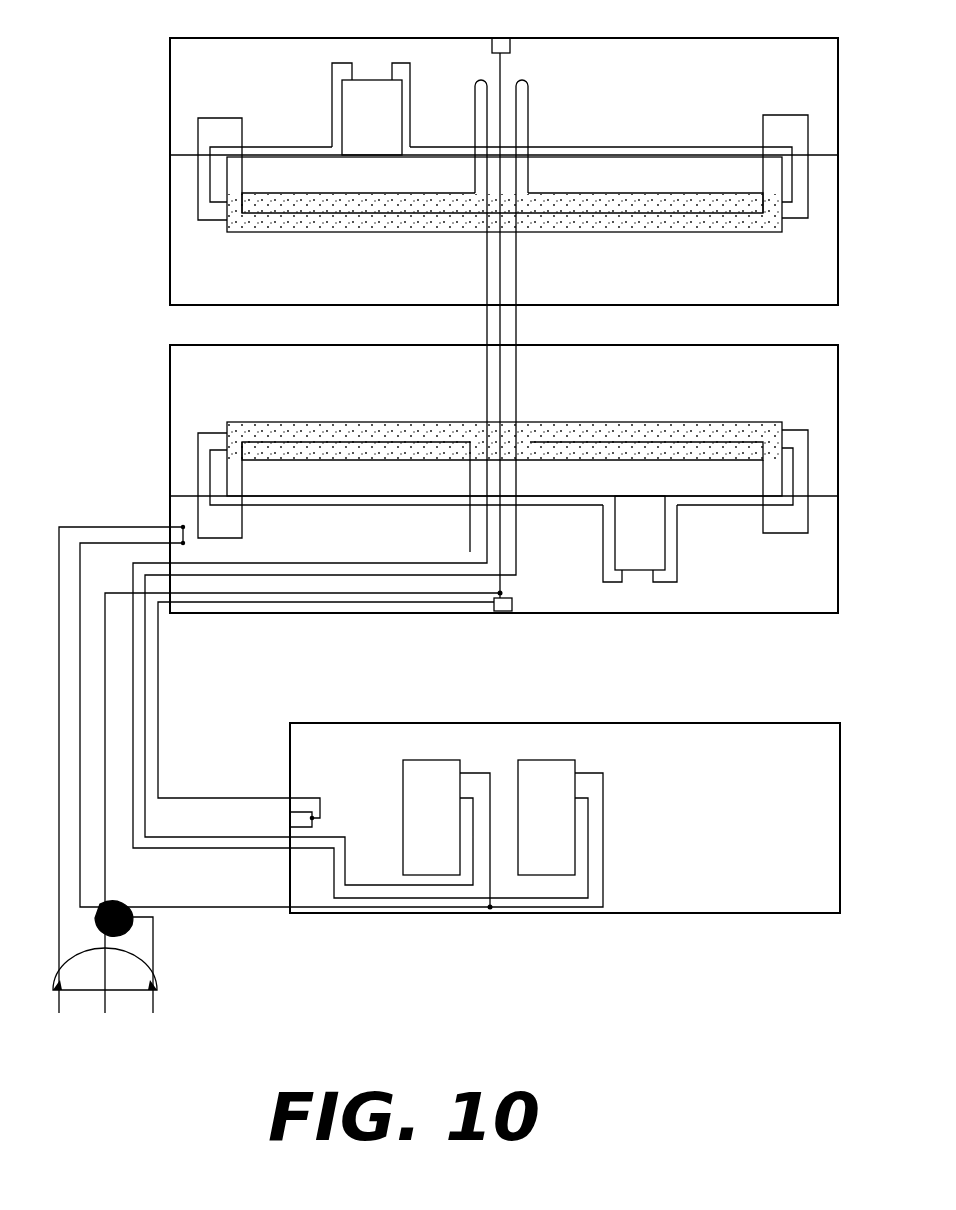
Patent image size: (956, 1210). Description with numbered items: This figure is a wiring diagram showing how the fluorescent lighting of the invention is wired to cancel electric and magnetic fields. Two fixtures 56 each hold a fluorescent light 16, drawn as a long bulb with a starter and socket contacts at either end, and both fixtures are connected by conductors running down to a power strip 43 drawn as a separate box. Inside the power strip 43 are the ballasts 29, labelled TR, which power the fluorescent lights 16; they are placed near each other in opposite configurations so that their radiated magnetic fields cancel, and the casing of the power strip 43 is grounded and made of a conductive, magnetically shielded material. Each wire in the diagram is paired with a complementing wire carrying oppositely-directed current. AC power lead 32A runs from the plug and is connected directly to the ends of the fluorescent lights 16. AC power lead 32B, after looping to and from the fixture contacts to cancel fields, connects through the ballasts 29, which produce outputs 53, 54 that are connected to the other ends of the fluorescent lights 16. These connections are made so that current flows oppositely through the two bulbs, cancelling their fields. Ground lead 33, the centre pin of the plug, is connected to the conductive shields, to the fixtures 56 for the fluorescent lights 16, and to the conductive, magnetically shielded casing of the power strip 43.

The fixture 56 is at (778, 38).
The fluorescent light 16 is at (400, 222).
The ballast output 54 is at (198, 222).
The ballast output 53 is at (790, 535).
The AC power lead 32A is at (793, 220).
The AC power lead 32B is at (472, 772).
The ground lead 33 is at (107, 1013).
The power strip 43 is at (655, 728).
The ballast 29 is at (408, 760).